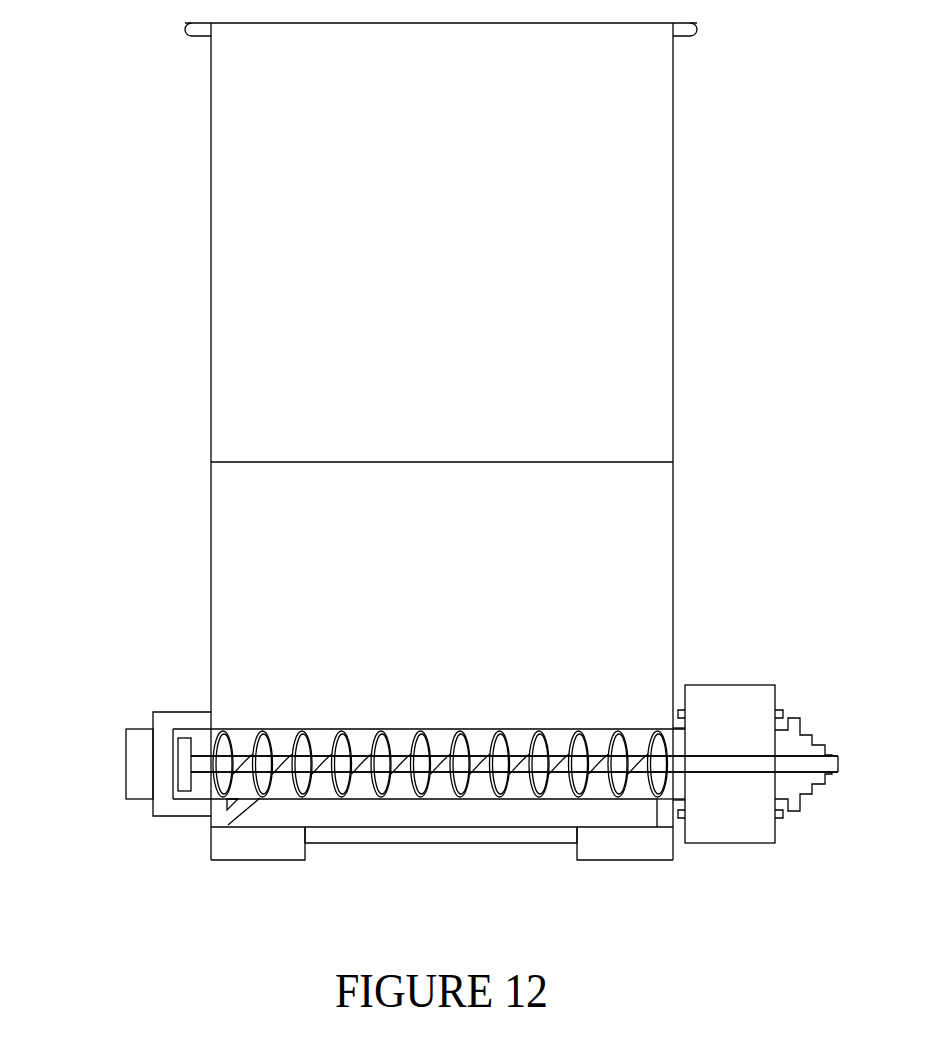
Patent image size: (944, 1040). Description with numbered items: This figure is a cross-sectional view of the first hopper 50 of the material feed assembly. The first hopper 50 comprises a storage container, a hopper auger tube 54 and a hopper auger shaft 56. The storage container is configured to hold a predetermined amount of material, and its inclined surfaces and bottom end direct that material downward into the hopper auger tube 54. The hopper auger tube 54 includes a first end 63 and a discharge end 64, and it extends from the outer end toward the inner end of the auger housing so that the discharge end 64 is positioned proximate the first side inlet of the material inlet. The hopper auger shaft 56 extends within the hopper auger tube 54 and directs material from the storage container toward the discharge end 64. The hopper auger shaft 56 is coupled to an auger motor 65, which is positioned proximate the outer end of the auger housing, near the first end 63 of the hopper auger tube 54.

The first hopper 50 is at (717, 218).
The hopper auger tube 54 is at (442, 728).
The hopper auger shaft 56 is at (428, 790).
The first end 63 is at (170, 814).
The discharge end 64 is at (730, 843).
The auger motor 65 is at (113, 764).